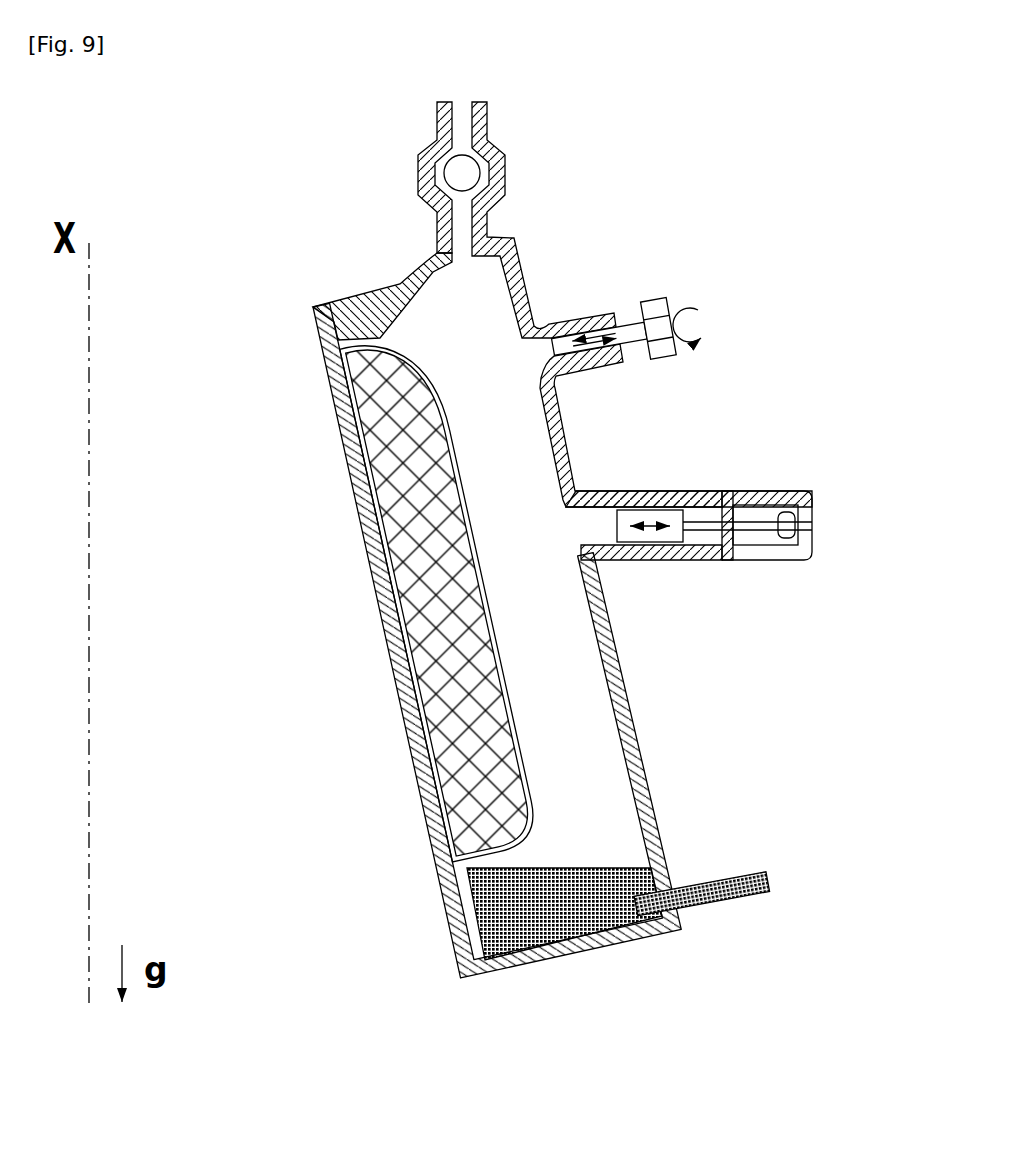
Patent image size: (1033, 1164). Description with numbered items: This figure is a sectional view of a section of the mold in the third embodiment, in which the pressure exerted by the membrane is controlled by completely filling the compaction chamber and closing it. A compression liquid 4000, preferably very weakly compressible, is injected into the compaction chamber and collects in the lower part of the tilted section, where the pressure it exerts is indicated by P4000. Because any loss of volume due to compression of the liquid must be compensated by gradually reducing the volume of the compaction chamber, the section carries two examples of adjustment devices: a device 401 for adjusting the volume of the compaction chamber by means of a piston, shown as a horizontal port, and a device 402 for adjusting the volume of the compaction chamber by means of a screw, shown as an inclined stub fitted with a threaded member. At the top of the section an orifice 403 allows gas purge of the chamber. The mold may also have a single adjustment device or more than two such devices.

The device for adjusting the volume of the compaction chamber by means of a piston 401 is at (810, 470).
The device for adjusting the volume of the compaction chamber by means of a screw 402 is at (678, 288).
The orifice allowing gas purge 403 is at (528, 143).
The compression liquid 4000 is at (553, 925).
The liquid pressure P4000 is at (776, 880).